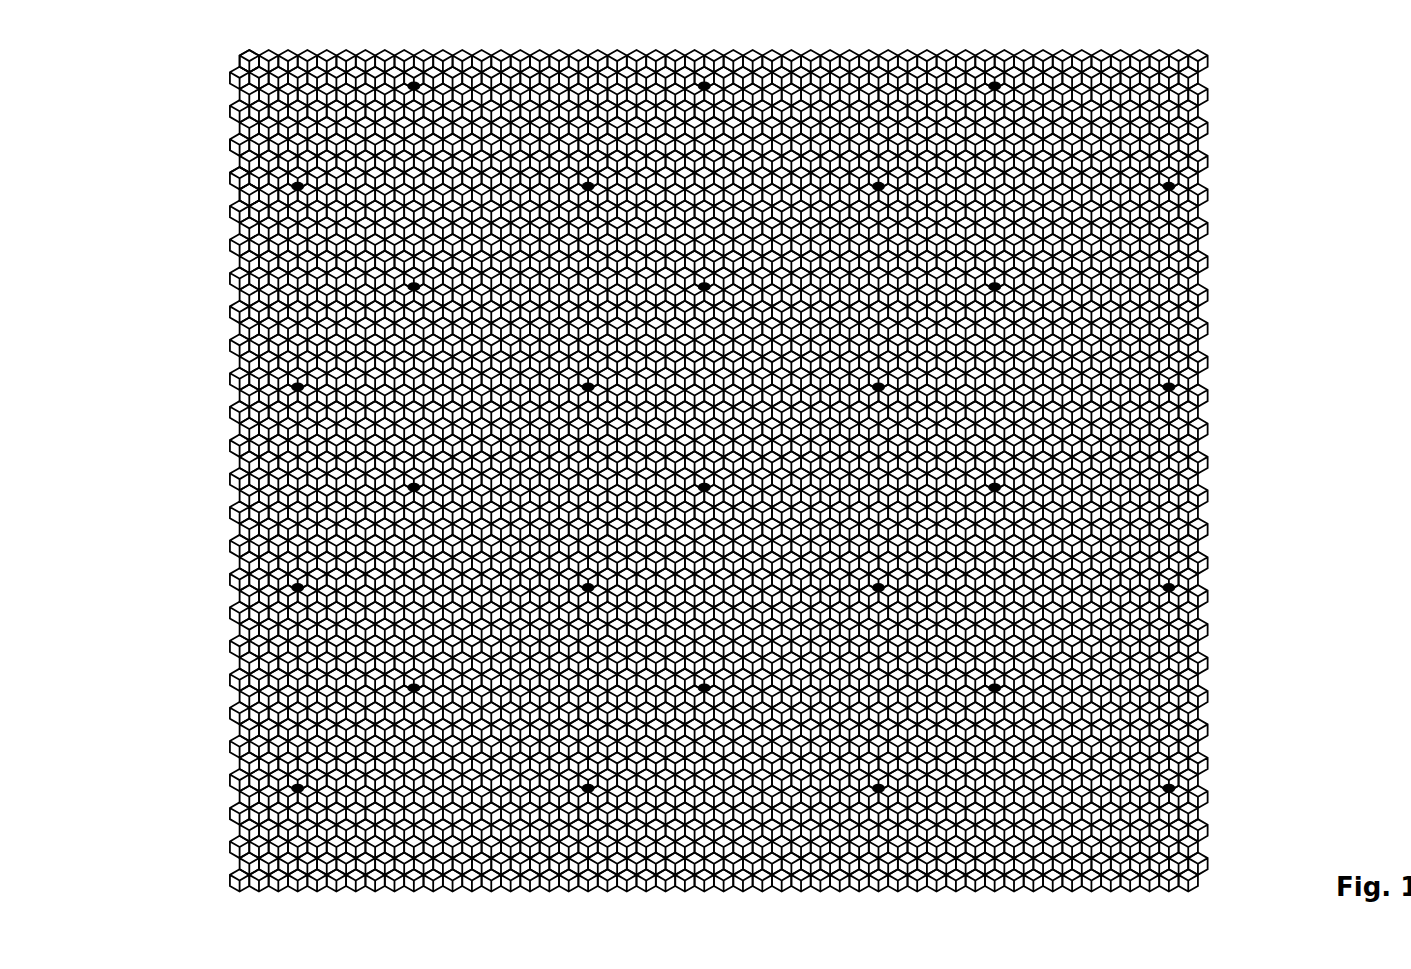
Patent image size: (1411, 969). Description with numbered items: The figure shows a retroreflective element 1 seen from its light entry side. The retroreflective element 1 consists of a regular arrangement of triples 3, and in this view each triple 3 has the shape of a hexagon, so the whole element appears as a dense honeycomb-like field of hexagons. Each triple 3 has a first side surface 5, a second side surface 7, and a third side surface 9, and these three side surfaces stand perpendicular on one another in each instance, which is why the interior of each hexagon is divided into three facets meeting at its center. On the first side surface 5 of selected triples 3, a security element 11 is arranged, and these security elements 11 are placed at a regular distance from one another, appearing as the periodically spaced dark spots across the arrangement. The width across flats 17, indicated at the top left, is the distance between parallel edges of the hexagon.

The retroreflective element 1 is at (110, 88).
The width across flats 17 is at (250, 49).
The triple 3 is at (233, 147).
The second side surface 7 is at (240, 167).
The third side surface 9 is at (242, 172).
The first side surface 5 is at (242, 193).
The security element 11 is at (240, 215).